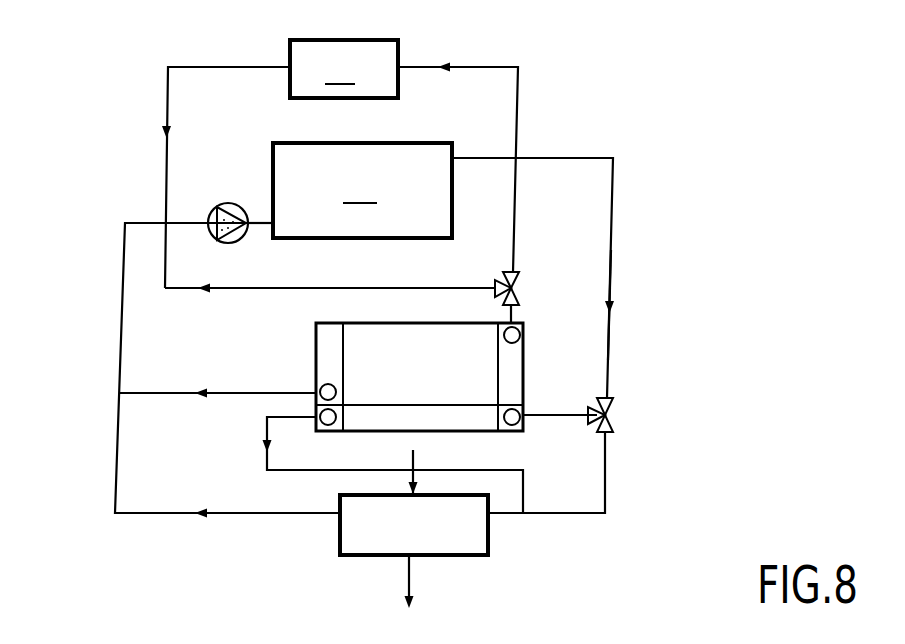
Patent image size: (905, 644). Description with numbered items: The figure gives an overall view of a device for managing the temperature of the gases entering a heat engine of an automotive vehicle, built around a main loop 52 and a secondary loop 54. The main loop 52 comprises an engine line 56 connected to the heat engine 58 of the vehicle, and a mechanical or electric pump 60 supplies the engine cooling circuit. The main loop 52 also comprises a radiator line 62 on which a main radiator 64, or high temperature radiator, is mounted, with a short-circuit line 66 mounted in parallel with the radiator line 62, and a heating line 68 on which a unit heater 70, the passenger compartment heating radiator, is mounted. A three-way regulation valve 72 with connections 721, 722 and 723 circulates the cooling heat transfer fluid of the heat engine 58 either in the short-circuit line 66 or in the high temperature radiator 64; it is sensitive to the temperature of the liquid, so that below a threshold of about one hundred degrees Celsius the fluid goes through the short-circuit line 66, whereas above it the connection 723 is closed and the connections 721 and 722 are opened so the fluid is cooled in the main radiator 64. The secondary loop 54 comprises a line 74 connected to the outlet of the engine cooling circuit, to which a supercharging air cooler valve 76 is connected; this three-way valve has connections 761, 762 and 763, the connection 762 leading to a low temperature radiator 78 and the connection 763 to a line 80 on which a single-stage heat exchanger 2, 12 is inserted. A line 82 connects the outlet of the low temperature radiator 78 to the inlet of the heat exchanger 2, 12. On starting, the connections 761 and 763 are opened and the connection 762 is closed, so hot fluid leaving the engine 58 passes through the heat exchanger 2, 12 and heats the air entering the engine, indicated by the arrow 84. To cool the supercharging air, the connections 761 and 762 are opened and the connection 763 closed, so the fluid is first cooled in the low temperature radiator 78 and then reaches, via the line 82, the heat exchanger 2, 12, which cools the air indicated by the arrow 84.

The heat exchanger 2 is at (431, 554).
The heat exchanger 12 is at (460, 557).
The main loop 52 is at (121, 295).
The secondary loop 54 is at (618, 332).
The engine line 56 is at (183, 222).
The heat engine 58 is at (362, 190).
The pump 60 is at (236, 205).
The radiator line 62 is at (228, 392).
The main radiator 64 is at (366, 352).
The short-circuit line 66 is at (324, 288).
The heating line 68 is at (500, 67).
The unit heater 70 is at (280, 164).
The three-way regulation valve 72 is at (507, 259).
The connection of the regulation valve 721 is at (504, 277).
The connection of the regulation valve 722 is at (521, 297).
The connection of the regulation valve 723 is at (468, 271).
The line 74 is at (614, 232).
The supercharging air cooler valve 76 is at (593, 427).
The connection of the supercharging air cooler valve 761 is at (614, 402).
The connection of the supercharging air cooler valve 762 is at (592, 407).
The connection of the supercharging air cooler valve 763 is at (609, 434).
The low temperature radiator 78 is at (437, 416).
The line 80 is at (156, 515).
The line 82 is at (288, 471).
The arrow 84 is at (409, 575).